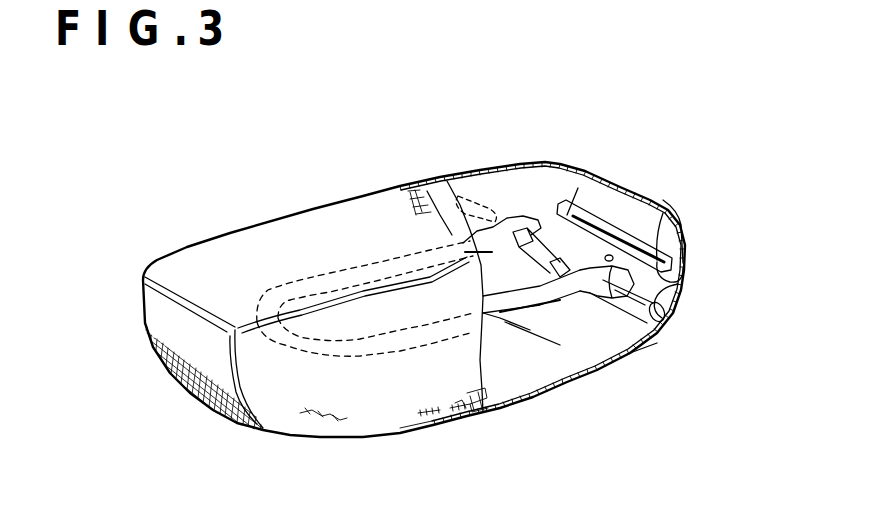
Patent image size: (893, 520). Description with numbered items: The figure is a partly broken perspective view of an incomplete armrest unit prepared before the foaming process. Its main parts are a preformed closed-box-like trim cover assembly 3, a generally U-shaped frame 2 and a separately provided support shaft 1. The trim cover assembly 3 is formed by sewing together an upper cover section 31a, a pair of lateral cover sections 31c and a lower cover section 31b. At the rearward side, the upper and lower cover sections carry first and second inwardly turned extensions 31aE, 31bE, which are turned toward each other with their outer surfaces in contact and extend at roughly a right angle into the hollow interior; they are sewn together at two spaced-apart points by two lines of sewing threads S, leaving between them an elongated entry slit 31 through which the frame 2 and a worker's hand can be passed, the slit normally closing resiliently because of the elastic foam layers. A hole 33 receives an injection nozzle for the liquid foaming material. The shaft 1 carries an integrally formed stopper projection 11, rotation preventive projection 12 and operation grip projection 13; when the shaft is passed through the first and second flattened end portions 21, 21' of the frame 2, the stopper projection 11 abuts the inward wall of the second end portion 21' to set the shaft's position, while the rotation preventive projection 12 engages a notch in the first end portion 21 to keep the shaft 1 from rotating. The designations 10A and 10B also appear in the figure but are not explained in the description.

The support shaft 1 is at (657, 343).
The U-shaped frame 2 is at (513, 313).
The trim cover assembly 3 is at (320, 227).
The pocket 10A is at (458, 196).
The shaft 10B is at (679, 301).
The stopper projection 11 is at (524, 245).
The rotation preventive projection 12 is at (600, 295).
The operation grip projection 13 is at (557, 262).
The first flattened end portion 21 is at (542, 357).
The second flattened end portion 21' is at (511, 179).
The entry slit 31 is at (689, 261).
The upper cover section 31a is at (373, 220).
The first inwardly turned extension 31aE is at (668, 217).
The lower cover section 31b is at (463, 418).
The second inwardly turned extension 31bE is at (684, 278).
The lateral cover section 31c is at (250, 223).
The hole 33 is at (637, 244).
The sewing threads S is at (578, 188).